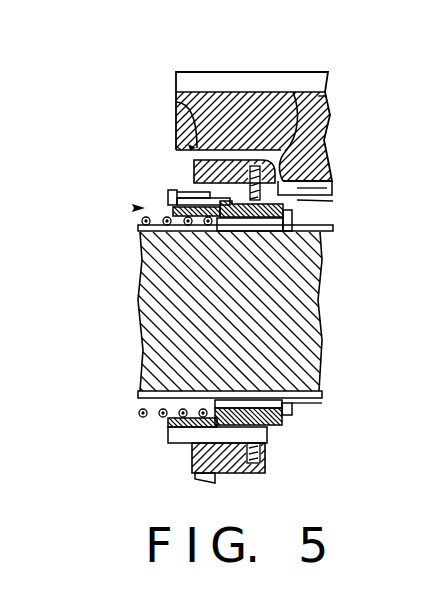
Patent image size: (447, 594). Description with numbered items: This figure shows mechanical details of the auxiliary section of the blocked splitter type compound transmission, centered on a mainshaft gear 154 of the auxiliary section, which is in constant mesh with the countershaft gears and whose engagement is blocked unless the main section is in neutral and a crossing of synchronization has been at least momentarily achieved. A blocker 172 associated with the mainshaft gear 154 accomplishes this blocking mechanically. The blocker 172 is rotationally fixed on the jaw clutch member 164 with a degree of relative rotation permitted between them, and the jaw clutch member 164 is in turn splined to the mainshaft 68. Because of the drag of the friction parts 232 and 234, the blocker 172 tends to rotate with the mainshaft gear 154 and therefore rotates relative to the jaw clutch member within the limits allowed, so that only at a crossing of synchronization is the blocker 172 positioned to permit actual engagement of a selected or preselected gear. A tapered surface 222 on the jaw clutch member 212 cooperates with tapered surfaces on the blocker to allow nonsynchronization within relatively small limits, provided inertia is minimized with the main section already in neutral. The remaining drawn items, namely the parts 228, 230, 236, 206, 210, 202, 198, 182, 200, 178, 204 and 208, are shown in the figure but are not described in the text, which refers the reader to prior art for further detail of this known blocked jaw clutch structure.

The mainshaft gear 154 is at (252, 70).
The outer surface 228 is at (322, 99).
The curved surface 230 is at (333, 128).
The friction part 232 is at (180, 108).
The friction part 234 is at (177, 148).
The seal 236 is at (185, 156).
The blocker 172 is at (196, 165).
The bolt 206 is at (320, 189).
The plate 210 is at (297, 200).
The jaw clutch member 212 is at (168, 193).
The guide bar 202 is at (132, 207).
The tapered surface 222 is at (221, 212).
The bracket 198 is at (265, 231).
The stop member 182 is at (292, 216).
The plate 200 is at (333, 231).
The jaw clutch member 164 is at (170, 237).
The side wall 178 is at (200, 230).
The mainshaft 68 is at (172, 330).
The lower guide bar 204 is at (168, 435).
The lower retainer block 208 is at (272, 430).